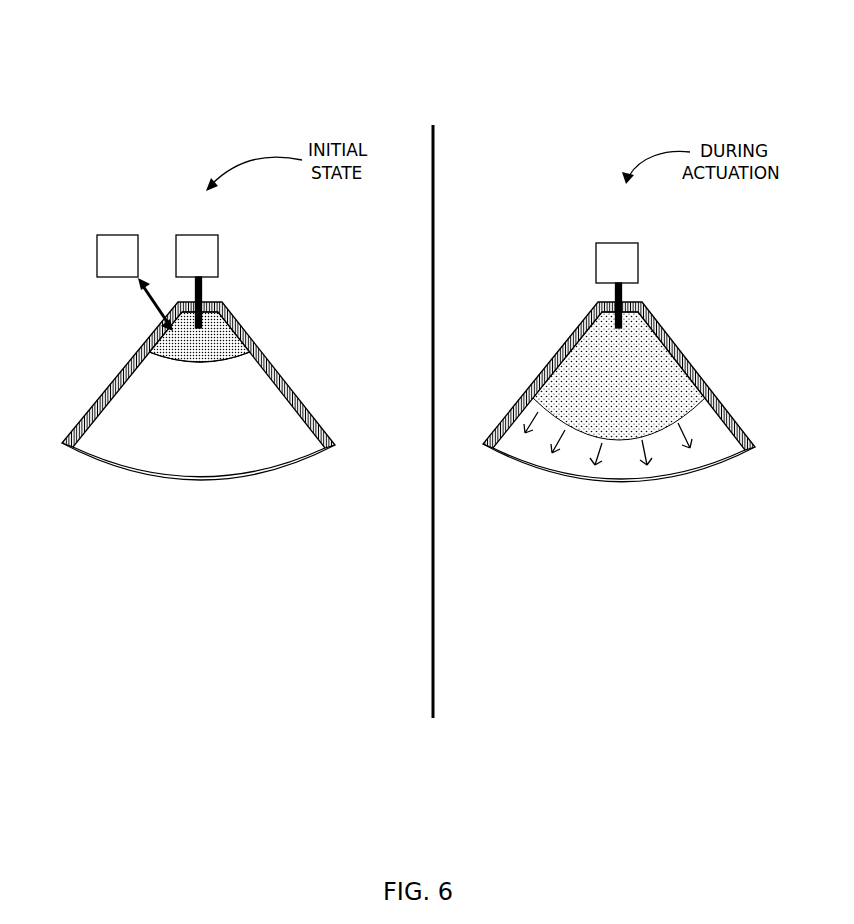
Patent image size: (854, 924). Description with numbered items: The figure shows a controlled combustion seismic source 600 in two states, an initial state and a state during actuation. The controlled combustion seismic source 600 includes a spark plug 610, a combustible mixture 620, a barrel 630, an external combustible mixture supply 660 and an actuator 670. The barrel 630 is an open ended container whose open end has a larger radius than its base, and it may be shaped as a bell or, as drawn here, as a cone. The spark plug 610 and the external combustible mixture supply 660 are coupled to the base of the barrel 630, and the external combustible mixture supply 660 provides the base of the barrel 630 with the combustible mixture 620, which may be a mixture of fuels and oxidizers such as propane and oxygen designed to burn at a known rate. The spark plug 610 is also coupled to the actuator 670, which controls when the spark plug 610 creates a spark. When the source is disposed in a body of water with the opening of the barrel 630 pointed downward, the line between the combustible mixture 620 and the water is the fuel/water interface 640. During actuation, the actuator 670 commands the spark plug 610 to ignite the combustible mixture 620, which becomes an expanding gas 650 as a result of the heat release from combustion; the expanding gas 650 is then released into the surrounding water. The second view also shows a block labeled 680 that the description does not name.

The controlled combustion seismic source 600 is at (423, 40).
The spark plug 610 is at (203, 296).
The combustible mixture 620 is at (222, 338).
The barrel 630 is at (282, 378).
The fuel/water interface 640 is at (163, 361).
The expanding gas 650 is at (632, 345).
The external combustible mixture supply 660 is at (132, 234).
The actuator 670 is at (212, 234).
The actuator during actuation 680 is at (632, 242).